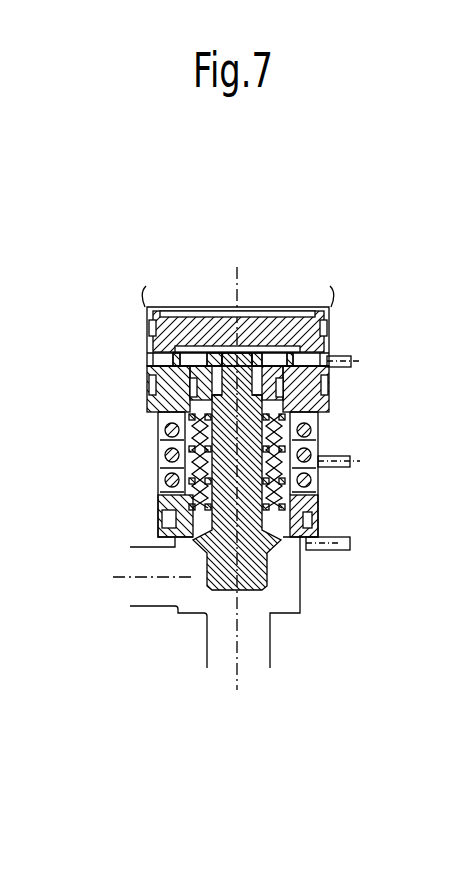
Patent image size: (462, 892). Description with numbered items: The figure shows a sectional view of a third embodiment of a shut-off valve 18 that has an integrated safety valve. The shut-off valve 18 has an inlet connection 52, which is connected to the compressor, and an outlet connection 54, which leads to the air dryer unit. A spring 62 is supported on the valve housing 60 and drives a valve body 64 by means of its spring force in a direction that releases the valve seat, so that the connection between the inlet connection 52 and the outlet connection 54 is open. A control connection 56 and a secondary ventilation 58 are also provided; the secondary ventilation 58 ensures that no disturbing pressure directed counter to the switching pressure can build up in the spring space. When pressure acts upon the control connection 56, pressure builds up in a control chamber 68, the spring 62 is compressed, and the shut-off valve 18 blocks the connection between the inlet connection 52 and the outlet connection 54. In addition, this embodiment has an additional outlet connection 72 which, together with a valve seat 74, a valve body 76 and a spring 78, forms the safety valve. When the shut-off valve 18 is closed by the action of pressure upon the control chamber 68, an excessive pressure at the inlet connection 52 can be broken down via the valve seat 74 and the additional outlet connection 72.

The shut-off valve 18 is at (193, 693).
The inlet connection 52 is at (128, 585).
The outlet connection 54 is at (257, 660).
The control connection 56 is at (326, 352).
The secondary ventilation 58 is at (330, 455).
The valve housing 60 is at (157, 403).
The spring 62 is at (158, 475).
The valve body 64 is at (318, 478).
The control chamber 68 is at (268, 350).
The additional outlet connection 72 is at (340, 557).
The valve seat 74 is at (336, 538).
The valve body 76 is at (160, 535).
The spring 78 is at (157, 437).